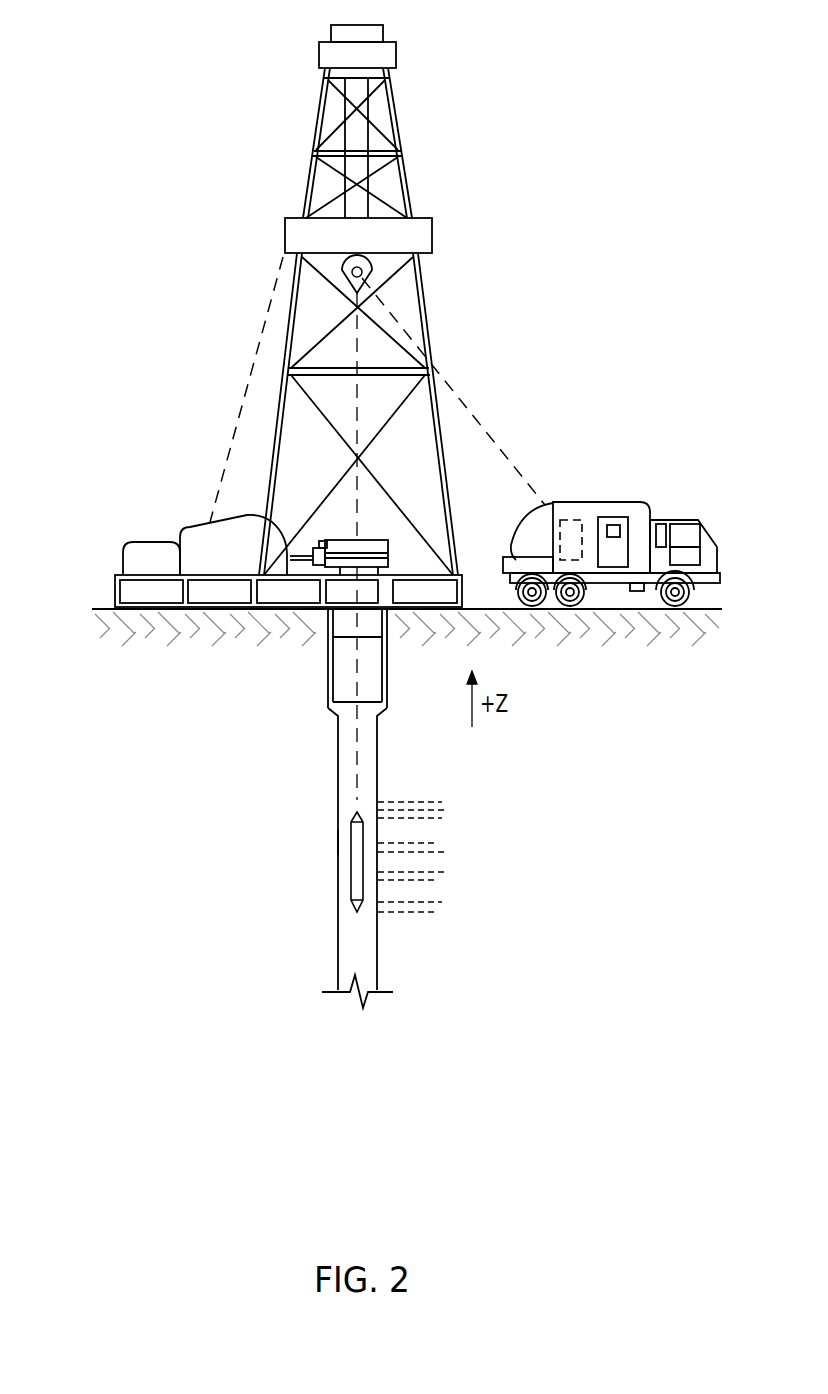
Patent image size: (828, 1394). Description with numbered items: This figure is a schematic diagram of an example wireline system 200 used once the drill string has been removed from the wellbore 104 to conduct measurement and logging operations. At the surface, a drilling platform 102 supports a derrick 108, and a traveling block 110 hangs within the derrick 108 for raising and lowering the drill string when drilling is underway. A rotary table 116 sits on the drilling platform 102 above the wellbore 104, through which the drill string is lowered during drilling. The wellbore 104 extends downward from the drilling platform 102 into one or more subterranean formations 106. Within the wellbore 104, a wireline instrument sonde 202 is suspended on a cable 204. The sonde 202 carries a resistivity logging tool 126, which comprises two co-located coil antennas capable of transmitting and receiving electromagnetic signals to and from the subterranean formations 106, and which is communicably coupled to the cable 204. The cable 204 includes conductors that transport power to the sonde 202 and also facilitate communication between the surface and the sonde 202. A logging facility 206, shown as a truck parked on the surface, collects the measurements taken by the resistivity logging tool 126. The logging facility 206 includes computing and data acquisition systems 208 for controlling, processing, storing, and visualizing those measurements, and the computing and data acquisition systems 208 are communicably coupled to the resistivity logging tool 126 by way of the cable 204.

The drilling platform 102 is at (114, 587).
The wellbore 104 is at (378, 765).
The subterranean formations 106 is at (450, 800).
The derrick 108 is at (402, 127).
The traveling block 110 is at (364, 274).
The rotary table 116 is at (375, 540).
The resistivity logging tool 126 is at (355, 884).
The wireline system 200 is at (570, 282).
The wireline instrument sonde 202 is at (347, 843).
The cable 204 is at (480, 428).
The logging facility 206 is at (640, 502).
The computing and data acquisition systems 208 is at (575, 520).